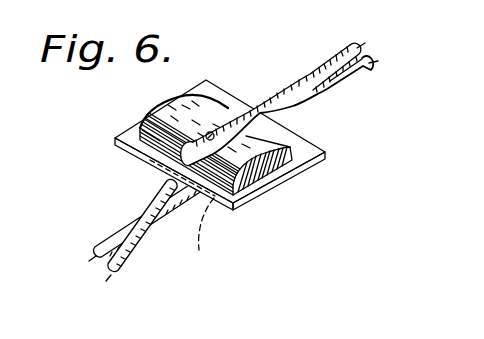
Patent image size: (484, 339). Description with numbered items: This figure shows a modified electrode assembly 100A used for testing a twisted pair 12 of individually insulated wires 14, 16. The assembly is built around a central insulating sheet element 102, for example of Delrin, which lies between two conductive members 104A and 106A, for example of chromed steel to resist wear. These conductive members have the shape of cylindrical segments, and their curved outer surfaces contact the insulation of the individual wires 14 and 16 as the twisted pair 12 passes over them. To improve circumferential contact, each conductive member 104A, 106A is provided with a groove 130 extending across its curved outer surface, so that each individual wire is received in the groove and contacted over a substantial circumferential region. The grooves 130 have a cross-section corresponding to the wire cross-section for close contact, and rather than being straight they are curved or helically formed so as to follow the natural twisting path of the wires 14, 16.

The twisted pair 12 is at (330, 42).
The insulated wire 14 is at (224, 124).
The insulated wire 16 is at (277, 95).
The electrode assembly 100A is at (120, 112).
The insulating sheet element 102 is at (284, 172).
The conductive member 104A is at (268, 138).
The conductive member 106A is at (227, 237).
The groove 130 is at (153, 153).